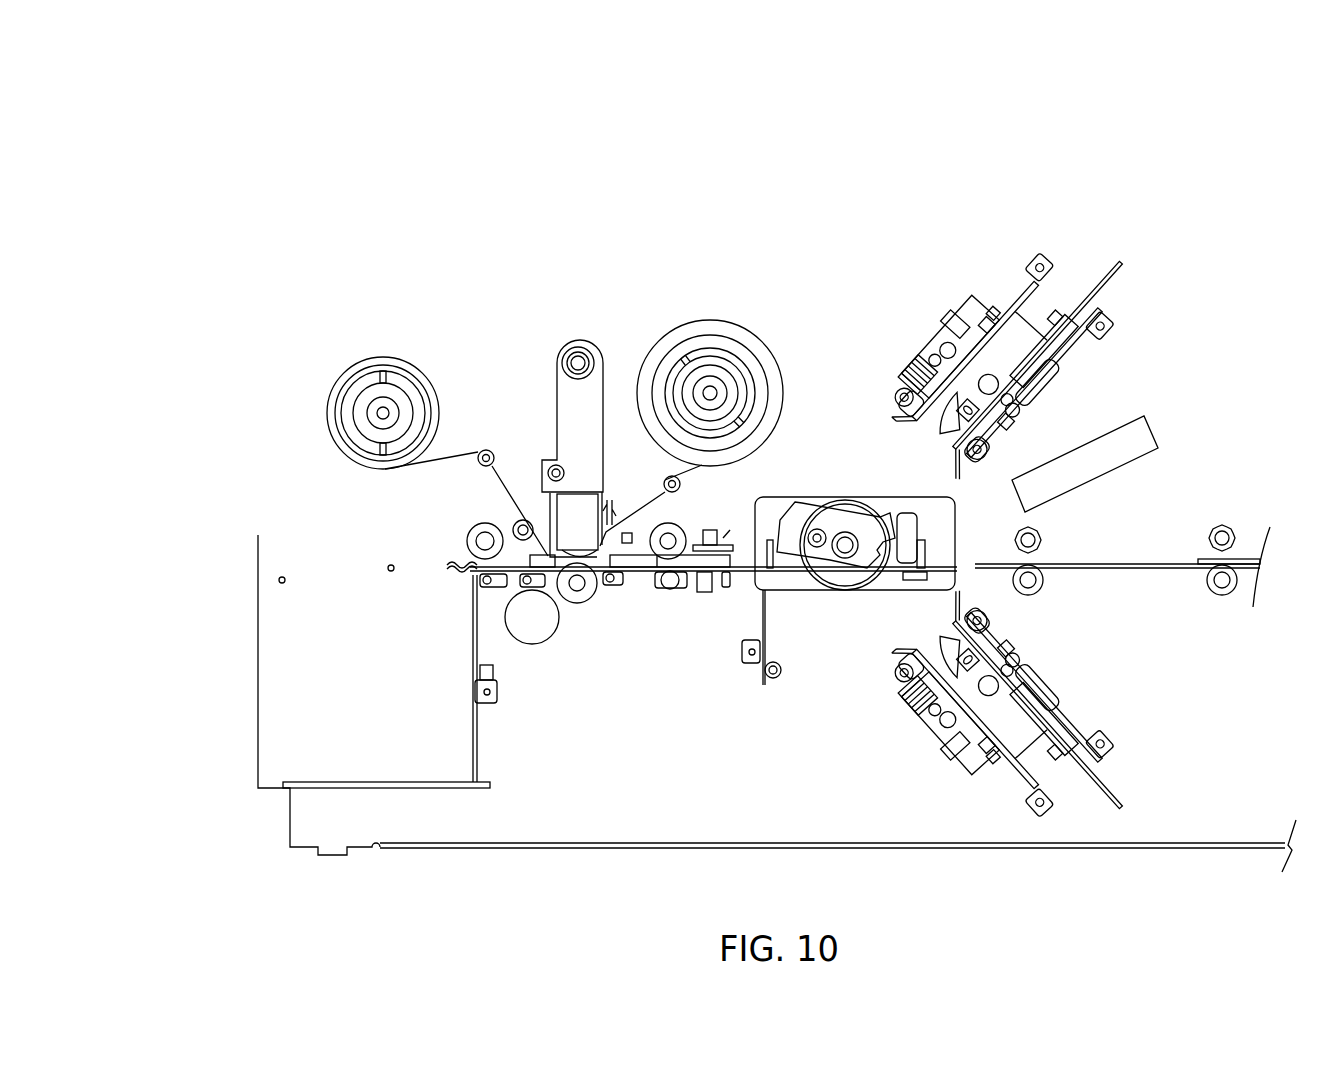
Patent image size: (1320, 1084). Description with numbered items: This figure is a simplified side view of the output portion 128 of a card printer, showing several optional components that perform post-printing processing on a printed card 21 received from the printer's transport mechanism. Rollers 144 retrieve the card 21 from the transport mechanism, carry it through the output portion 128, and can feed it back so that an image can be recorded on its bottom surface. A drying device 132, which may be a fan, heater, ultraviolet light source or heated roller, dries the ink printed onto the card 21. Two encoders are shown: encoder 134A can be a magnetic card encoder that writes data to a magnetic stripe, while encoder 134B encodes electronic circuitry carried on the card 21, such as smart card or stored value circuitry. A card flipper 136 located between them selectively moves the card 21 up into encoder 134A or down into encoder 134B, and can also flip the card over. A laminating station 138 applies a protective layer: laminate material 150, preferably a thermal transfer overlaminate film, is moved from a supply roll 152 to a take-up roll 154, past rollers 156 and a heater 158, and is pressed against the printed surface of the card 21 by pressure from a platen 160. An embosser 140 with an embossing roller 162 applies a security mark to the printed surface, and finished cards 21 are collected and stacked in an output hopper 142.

The output portion 128 is at (1198, 182).
The drying device 132 is at (1153, 425).
The encoder 134A is at (942, 320).
The encoder 134B is at (942, 740).
The card flipper 136 is at (843, 493).
The laminating station 138 is at (518, 320).
The embosser 140 is at (460, 541).
The output hopper 142 is at (258, 633).
The rollers 144 is at (1198, 572).
The laminate material 150 is at (447, 455).
The supply roll 152 is at (722, 332).
The take-up roll 154 is at (398, 360).
The rollers 156 is at (491, 451).
The heater 158 is at (572, 530).
The platen 160 is at (590, 602).
The embossing roller 162 is at (447, 564).
The card 21 is at (1245, 556).